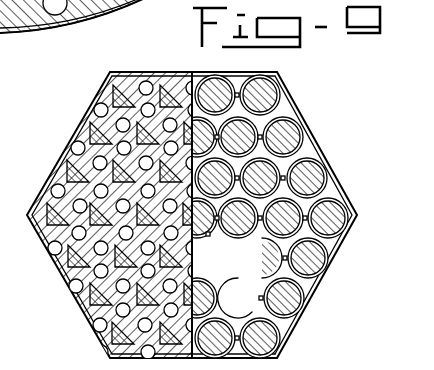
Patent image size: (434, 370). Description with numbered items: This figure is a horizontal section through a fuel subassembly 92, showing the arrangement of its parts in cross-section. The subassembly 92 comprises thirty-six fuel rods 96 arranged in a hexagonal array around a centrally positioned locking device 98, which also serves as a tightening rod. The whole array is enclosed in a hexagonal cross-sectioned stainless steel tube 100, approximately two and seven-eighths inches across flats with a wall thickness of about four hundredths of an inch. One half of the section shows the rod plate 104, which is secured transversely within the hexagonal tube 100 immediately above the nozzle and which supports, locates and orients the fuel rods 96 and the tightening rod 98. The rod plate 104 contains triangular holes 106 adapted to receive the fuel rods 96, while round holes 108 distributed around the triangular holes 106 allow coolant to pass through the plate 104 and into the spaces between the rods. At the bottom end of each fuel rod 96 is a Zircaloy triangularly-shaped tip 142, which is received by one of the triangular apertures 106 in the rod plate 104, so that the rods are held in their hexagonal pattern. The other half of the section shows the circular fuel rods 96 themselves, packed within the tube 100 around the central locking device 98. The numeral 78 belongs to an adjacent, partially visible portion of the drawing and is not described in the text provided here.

The cutting insert body 78 is at (150, 0).
The fuel subassembly 92 is at (331, 123).
The fuel rods 96 is at (290, 115).
The locking device 98 is at (206, 234).
The hexagonal tube 100 is at (324, 152).
The rod plate 104 is at (108, 78).
The triangular holes 106 is at (90, 304).
The round holes 108 is at (71, 149).
The triangularly-shaped tip 142 is at (115, 348).